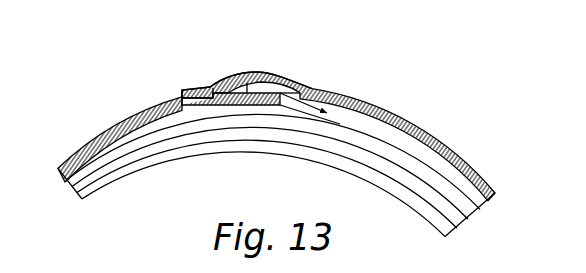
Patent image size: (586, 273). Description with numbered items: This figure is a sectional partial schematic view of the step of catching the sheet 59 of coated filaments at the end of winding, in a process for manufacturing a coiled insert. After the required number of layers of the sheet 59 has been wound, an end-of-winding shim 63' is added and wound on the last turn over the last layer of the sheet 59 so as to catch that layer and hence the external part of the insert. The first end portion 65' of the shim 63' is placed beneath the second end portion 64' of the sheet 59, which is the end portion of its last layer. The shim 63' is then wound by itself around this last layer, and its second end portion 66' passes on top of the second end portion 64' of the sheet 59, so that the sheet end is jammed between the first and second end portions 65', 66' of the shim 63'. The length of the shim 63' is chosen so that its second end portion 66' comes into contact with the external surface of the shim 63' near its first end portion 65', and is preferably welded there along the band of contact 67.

The sheet 59 is at (414, 142).
The end-of-winding shim 63' is at (302, 136).
The second end portion of the sheet 64' is at (261, 68).
The first end portion of the shim 65' is at (292, 57).
The second end portion of the shim 66' is at (176, 62).
The band of contact 67 is at (175, 96).